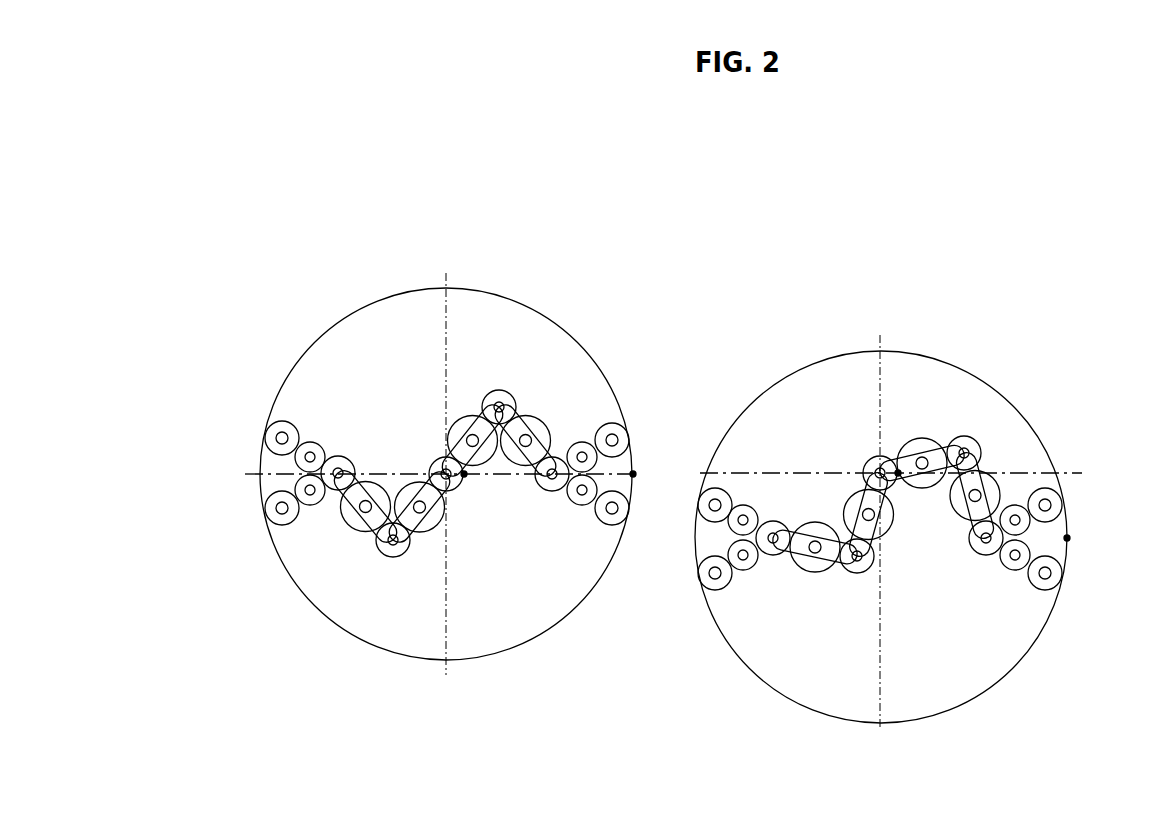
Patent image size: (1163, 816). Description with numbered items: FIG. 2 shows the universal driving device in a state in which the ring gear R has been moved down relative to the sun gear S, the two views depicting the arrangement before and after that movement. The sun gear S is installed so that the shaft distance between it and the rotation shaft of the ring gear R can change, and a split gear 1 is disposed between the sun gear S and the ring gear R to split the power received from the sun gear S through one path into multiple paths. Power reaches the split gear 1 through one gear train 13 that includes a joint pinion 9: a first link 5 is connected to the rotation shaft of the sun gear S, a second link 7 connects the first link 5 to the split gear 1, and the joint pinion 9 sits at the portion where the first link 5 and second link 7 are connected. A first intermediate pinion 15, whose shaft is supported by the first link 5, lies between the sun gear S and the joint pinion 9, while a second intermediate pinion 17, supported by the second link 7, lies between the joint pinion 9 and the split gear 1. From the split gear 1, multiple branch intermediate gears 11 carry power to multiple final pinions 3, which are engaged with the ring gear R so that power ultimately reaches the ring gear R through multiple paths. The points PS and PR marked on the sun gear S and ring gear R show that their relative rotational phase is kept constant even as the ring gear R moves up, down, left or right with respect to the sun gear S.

The split gear 1 is at (338, 456).
The final pinions 3 is at (266, 434).
The first link 5 is at (415, 528).
The second link 7 is at (380, 496).
The joint pinion 9 is at (385, 550).
The branch intermediate gears 11 is at (310, 441).
The gear train 13 is at (307, 693).
The first intermediate pinion 15 is at (363, 531).
The second intermediate pinion 17 is at (345, 517).
The ring gear R is at (413, 287).
The sun gear S is at (455, 483).
The point PS is at (464, 474).
The point PR is at (635, 473).